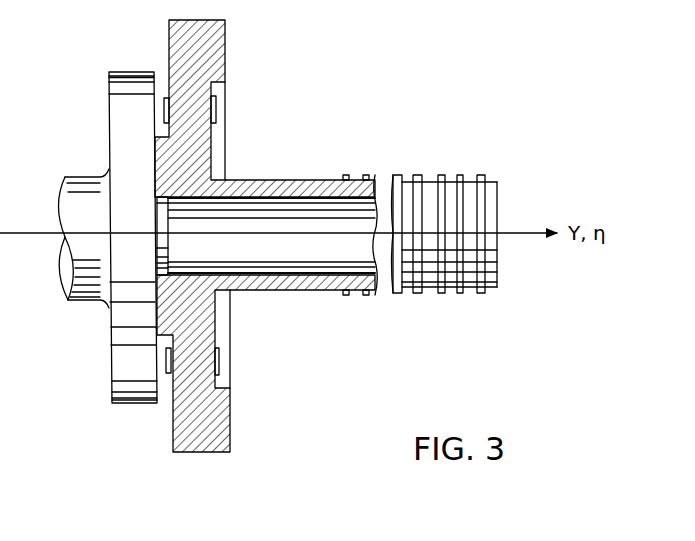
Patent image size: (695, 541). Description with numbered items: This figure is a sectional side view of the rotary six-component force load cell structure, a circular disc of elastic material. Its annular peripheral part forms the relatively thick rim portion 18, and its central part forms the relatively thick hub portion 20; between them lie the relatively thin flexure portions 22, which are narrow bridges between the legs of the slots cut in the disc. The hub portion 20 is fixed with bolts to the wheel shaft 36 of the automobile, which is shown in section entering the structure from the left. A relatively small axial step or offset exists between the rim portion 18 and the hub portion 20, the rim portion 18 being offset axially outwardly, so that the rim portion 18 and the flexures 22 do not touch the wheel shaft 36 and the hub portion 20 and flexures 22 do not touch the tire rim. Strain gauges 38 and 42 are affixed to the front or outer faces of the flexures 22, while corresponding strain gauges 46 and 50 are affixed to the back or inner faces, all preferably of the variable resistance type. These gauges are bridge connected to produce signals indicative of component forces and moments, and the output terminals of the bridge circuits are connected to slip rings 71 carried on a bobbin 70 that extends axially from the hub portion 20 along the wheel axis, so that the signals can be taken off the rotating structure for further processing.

The rim portion 18 is at (215, 47).
The hub portion 20 is at (203, 147).
The flexure portions 22 is at (192, 107).
The wheel shaft 36 is at (67, 192).
The strain gauge 38 is at (221, 358).
The strain gauge 42 is at (213, 107).
The strain gauge 46 is at (164, 362).
The strain gauge 50 is at (163, 107).
The bobbin 70 is at (303, 293).
The slip rings 71 is at (365, 293).